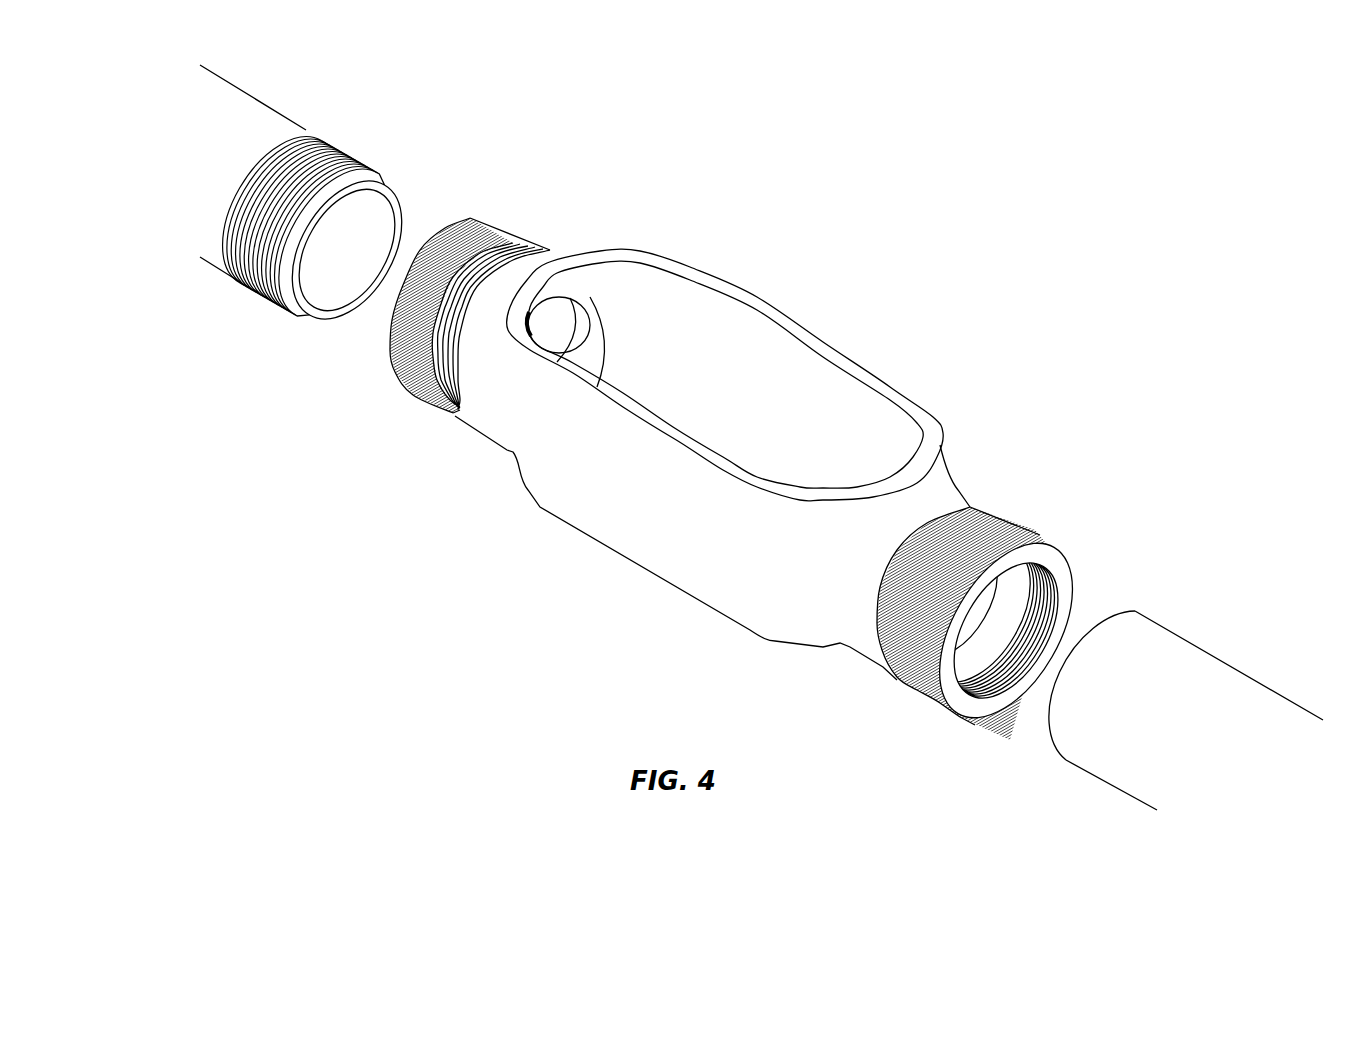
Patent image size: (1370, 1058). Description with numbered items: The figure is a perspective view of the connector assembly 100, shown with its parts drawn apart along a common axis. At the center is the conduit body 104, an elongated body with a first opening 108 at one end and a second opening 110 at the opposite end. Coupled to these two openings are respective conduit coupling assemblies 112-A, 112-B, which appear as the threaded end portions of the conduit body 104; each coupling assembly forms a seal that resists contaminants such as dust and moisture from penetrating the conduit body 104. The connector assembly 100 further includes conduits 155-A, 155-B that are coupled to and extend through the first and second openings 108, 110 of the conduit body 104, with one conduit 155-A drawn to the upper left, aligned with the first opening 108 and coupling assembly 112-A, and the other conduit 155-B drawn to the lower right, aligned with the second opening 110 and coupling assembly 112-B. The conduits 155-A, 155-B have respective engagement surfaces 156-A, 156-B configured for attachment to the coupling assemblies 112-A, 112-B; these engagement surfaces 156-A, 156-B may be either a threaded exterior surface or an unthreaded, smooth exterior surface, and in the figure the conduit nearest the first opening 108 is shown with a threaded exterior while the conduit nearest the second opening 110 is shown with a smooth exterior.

The connector assembly 100 is at (784, 146).
The conduit body 104 is at (590, 500).
The first opening 108 is at (548, 322).
The second opening 110 is at (1018, 590).
The conduit coupling assembly 112-A is at (497, 198).
The conduit coupling assembly 112-B is at (1011, 490).
The conduit 155-A is at (203, 256).
The conduit 155-B is at (1080, 762).
The engagement surface 156-A is at (314, 129).
The engagement surface 156-B is at (1160, 613).